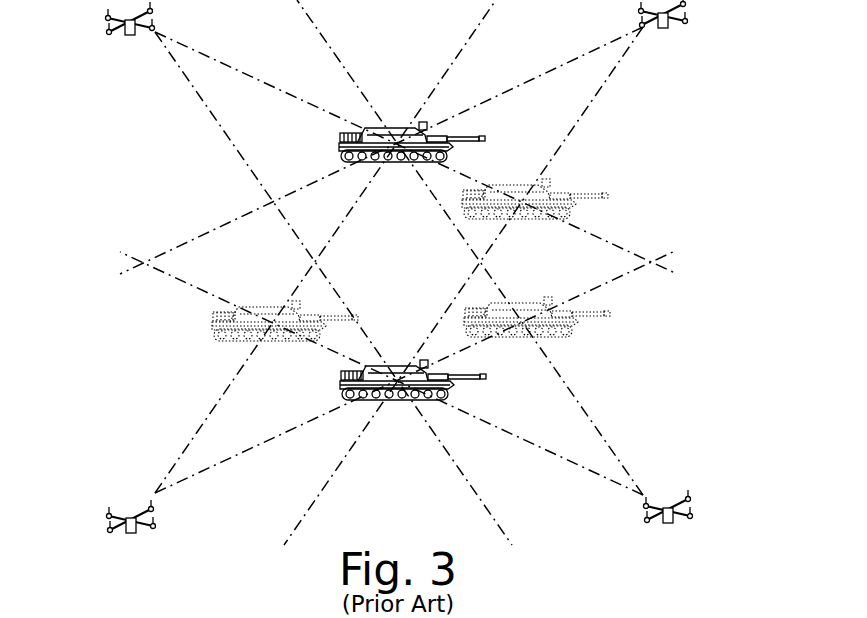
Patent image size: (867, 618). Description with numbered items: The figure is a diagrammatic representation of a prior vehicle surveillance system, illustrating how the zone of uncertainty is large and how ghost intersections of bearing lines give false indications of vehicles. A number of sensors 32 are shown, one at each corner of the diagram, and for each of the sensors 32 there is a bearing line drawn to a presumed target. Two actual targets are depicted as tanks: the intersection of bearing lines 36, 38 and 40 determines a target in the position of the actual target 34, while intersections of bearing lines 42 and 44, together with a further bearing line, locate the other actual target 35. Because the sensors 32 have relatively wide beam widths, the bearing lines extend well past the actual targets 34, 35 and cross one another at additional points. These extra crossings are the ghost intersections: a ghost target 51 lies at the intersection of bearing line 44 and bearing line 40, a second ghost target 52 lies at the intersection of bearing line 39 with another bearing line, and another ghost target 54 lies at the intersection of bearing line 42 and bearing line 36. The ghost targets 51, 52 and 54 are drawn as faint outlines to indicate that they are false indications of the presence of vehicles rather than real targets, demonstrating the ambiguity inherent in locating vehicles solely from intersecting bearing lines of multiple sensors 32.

The sensors 32 is at (108, 20).
The actual target 34 is at (390, 403).
The actual target 35 is at (397, 130).
The bearing line 36 is at (245, 455).
The bearing line 38 is at (207, 108).
The bearing line 39 is at (587, 108).
The bearing line 40 is at (550, 455).
The bearing line 42 is at (562, 378).
The bearing line 44 is at (212, 408).
The ghost target 51 is at (255, 308).
The ghost target 52 is at (508, 185).
The ghost target 54 is at (535, 302).